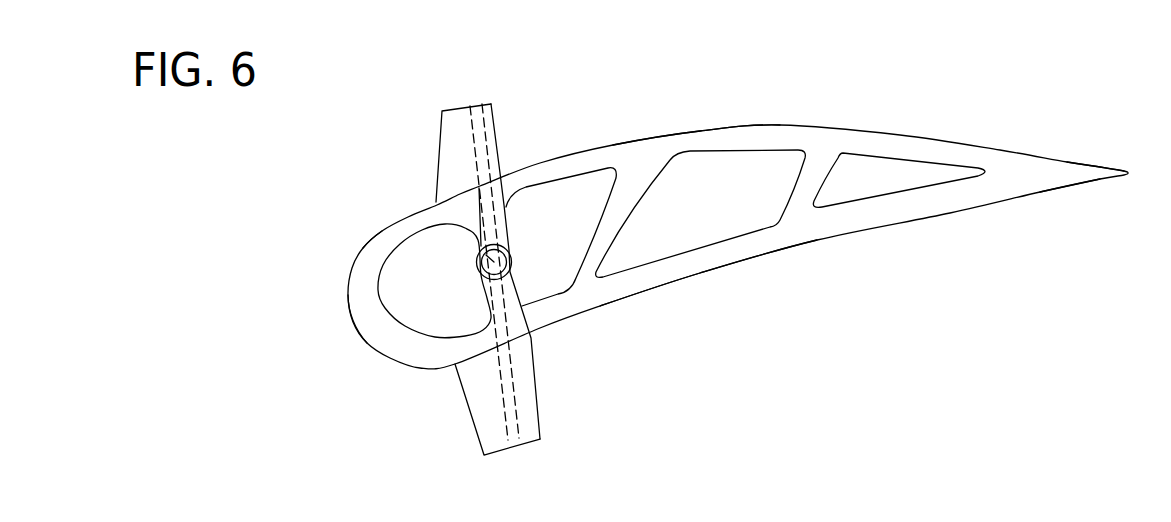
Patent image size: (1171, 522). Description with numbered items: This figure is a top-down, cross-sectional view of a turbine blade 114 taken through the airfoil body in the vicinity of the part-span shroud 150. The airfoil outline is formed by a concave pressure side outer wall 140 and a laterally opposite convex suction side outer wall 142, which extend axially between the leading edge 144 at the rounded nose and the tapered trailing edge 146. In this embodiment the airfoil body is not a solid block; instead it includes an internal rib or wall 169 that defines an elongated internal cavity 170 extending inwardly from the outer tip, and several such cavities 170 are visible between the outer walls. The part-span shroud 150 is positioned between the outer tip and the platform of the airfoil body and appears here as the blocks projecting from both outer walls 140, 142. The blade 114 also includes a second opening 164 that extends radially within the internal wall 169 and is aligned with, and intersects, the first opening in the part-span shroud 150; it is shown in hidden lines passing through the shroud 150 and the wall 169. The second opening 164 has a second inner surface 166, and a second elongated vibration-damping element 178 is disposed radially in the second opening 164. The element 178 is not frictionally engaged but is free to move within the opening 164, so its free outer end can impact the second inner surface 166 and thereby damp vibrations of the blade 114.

The blade 114 is at (872, 128).
The pressure side outer wall 140 is at (713, 272).
The suction side outer wall 142 is at (683, 131).
The leading edge 144 is at (352, 323).
The trailing edge 146 is at (1048, 176).
The part-span shroud 150 is at (438, 135).
The second opening 164 is at (474, 221).
The second inner surface 166 is at (530, 335).
The internal rib or wall 169 is at (497, 233).
The elongated internal cavity 170 is at (580, 200).
The second elongated vibration-damping element 178 is at (488, 260).